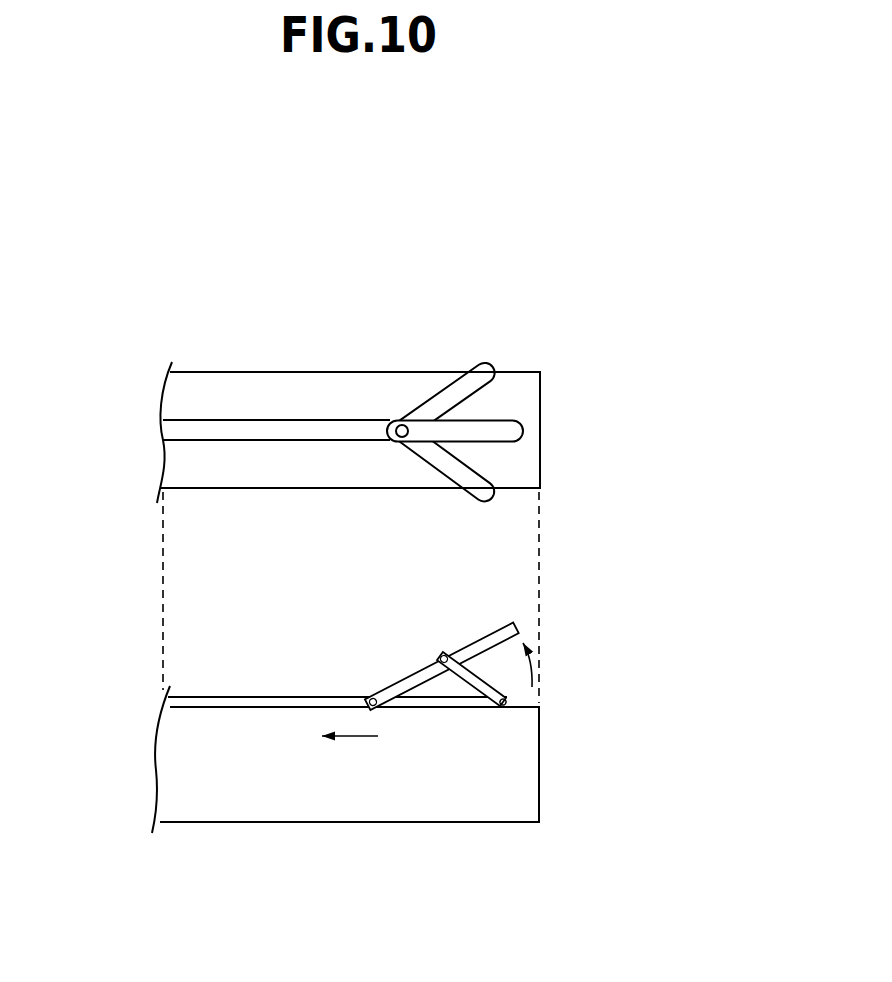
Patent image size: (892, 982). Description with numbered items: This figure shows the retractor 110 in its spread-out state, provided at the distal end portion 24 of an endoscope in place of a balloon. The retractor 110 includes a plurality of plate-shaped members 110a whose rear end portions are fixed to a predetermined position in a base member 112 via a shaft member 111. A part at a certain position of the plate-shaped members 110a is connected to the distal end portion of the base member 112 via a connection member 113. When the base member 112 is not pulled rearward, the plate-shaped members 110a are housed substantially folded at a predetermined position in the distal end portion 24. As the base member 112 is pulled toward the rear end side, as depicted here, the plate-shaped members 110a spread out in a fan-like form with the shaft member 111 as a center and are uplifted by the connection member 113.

The distal end portion 24 is at (449, 248).
The retractor 110 is at (420, 391).
The plate-shaped member 110a is at (513, 432).
The shaft member 111 is at (401, 439).
The base member 112 is at (237, 430).
The connection member 113 is at (470, 682).